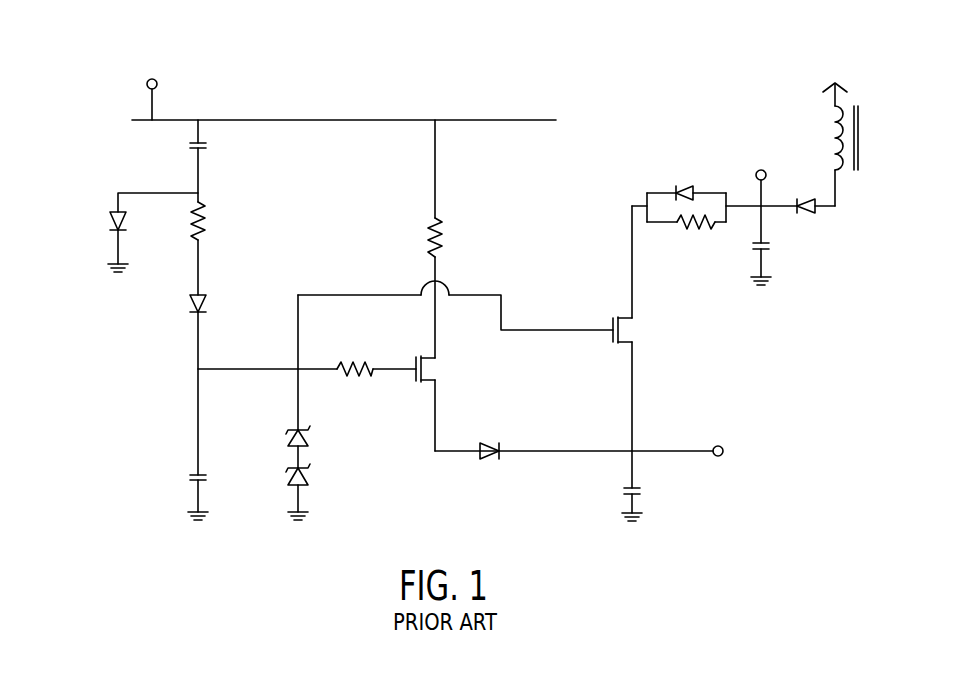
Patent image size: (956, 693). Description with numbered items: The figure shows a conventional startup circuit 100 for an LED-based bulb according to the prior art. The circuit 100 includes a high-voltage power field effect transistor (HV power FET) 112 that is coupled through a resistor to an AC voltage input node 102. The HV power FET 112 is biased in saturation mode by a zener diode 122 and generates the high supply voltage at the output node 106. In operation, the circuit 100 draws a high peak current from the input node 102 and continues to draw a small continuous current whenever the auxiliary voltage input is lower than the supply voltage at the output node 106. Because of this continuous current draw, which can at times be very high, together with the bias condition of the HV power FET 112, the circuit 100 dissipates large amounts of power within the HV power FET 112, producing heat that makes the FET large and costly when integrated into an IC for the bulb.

The startup circuit 100 is at (82, 67).
The VIN node 102 is at (157, 82).
The VDD,H node 106 is at (716, 444).
The high-voltage power field effect transistor 112 is at (421, 384).
The zener diode 122 is at (318, 428).